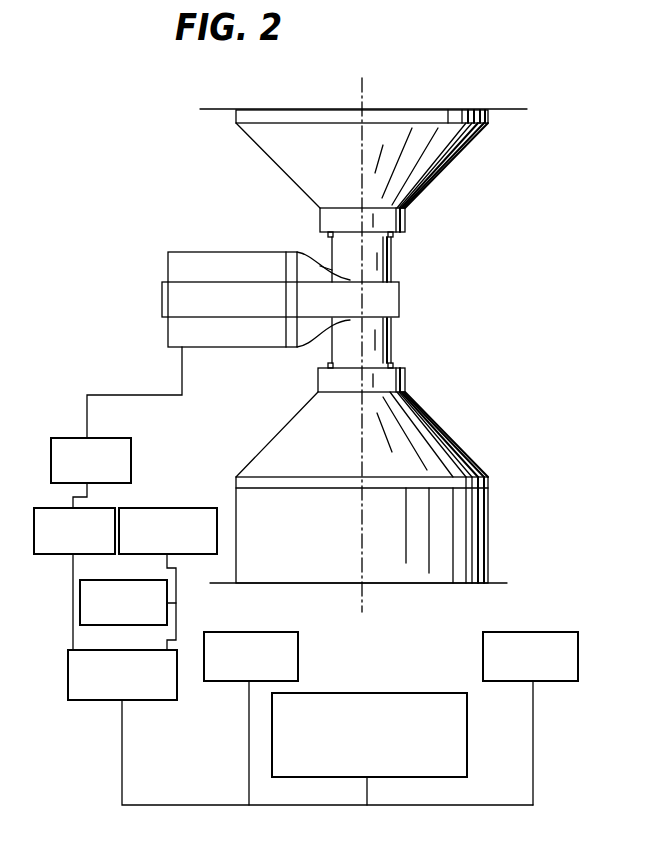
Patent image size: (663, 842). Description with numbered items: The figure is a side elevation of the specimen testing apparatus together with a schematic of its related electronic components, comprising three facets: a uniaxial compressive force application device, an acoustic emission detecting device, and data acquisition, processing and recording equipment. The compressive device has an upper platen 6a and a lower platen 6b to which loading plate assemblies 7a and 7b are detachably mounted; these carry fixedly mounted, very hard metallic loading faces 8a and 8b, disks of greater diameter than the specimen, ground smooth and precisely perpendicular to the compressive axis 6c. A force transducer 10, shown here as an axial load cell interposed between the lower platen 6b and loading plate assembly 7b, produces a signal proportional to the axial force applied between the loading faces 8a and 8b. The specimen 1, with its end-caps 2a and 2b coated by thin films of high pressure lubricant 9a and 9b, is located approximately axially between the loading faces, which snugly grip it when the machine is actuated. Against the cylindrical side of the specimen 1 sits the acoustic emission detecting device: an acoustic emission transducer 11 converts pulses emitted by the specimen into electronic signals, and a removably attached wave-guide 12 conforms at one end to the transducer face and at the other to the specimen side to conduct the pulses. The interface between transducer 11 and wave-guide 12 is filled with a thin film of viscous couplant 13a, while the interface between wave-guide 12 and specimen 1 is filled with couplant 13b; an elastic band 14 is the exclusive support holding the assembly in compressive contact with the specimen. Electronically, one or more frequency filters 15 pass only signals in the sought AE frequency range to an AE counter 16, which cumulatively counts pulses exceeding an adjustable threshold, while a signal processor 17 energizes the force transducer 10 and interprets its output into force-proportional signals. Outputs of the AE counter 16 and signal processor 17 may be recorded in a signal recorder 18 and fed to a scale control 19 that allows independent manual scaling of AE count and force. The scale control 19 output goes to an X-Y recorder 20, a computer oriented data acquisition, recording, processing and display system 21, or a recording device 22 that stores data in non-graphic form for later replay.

The specimen 1 is at (386, 262).
The specimen end-cap 2a is at (395, 238).
The specimen end-cap 2b is at (372, 366).
The platen 6a is at (403, 97).
The platen 6b is at (393, 598).
The compressive axis 6c is at (362, 96).
The loading plate assembly 7a is at (407, 162).
The loading plate assembly 7b is at (435, 440).
The loading face 8a is at (405, 218).
The loading face 8b is at (405, 378).
The high pressure lubricant 9a is at (399, 236).
The high pressure lubricant 9b is at (397, 366).
The force transducer 10 is at (475, 515).
The acoustic emission transducer 11 is at (200, 263).
The wave-guide 12 is at (327, 268).
The viscous material 13a is at (290, 255).
The viscous material 13b is at (337, 265).
The elastic band 14 is at (162, 298).
The frequency filter 15 is at (63, 443).
The AE counter 16 is at (42, 516).
The signal processor 17 is at (205, 516).
The signal recorder 18 is at (80, 593).
The scale control 19 is at (68, 678).
The X-Y recorder 20 is at (290, 636).
The data acquisition, recording, processing and display system 21 is at (448, 700).
The recording device 22 is at (572, 635).